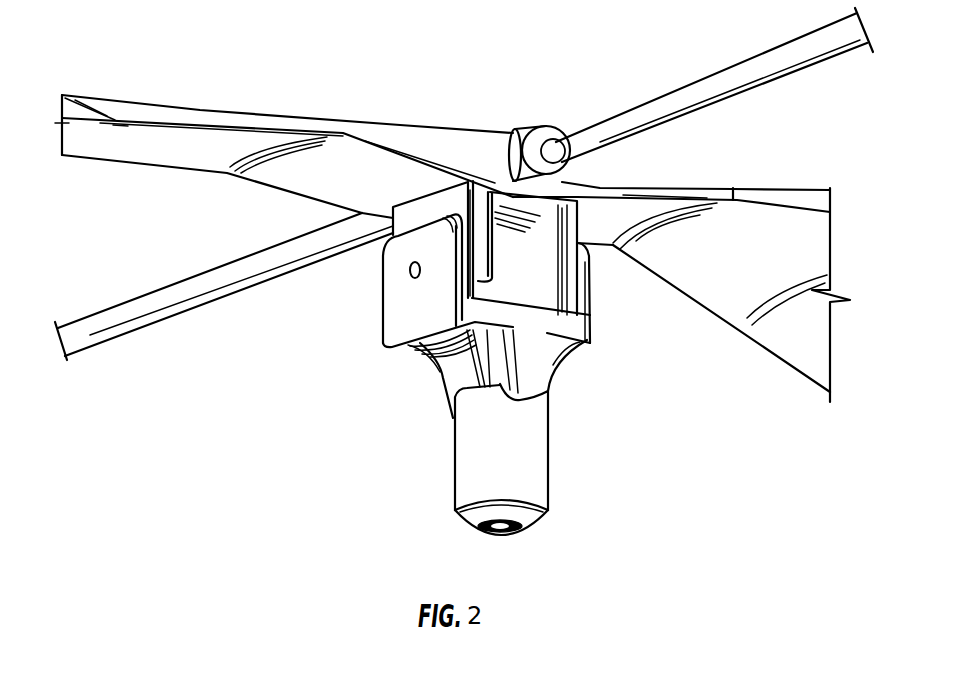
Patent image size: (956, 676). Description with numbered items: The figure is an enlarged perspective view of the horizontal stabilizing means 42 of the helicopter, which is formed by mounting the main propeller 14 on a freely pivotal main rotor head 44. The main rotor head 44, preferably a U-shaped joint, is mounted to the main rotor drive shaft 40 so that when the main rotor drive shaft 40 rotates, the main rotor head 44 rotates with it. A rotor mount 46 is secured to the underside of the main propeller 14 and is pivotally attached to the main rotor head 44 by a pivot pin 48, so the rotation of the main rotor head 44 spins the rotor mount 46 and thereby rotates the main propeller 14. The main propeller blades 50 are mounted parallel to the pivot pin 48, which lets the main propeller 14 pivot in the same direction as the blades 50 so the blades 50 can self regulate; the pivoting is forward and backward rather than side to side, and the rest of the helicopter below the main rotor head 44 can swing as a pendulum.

The main propeller 14 is at (464, 205).
The main propeller blades 50 is at (235, 125).
The horizontal stabilizing means 42 is at (416, 228).
The main rotor head 44 is at (407, 323).
The rotor mount 46 is at (453, 192).
The pivot pin 48 is at (408, 269).
The main rotor drive shaft 40 is at (455, 463).